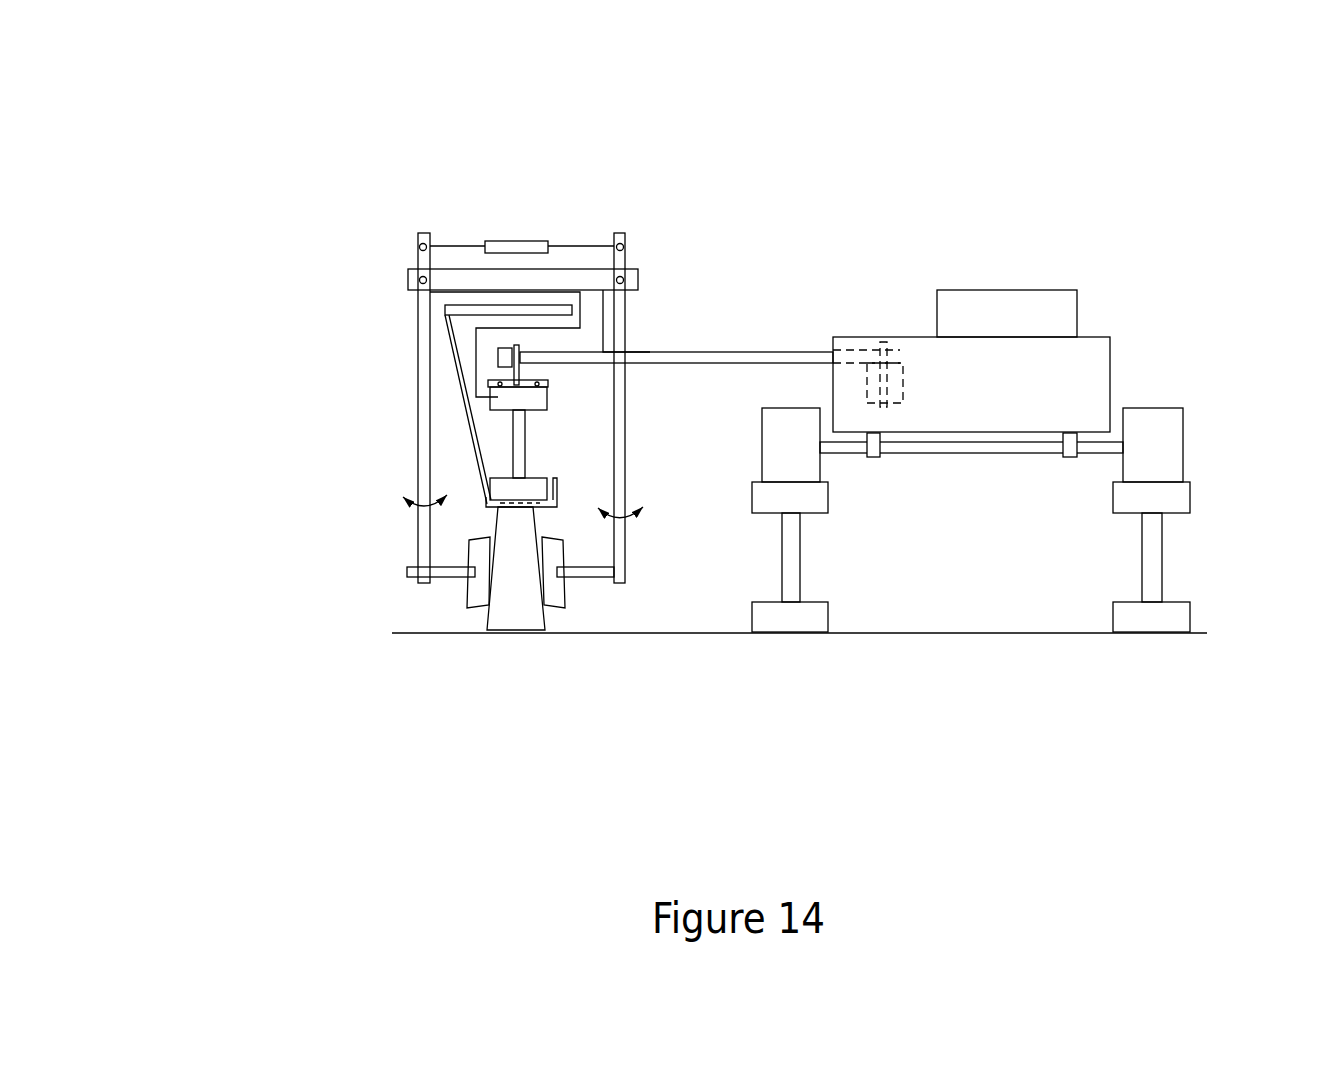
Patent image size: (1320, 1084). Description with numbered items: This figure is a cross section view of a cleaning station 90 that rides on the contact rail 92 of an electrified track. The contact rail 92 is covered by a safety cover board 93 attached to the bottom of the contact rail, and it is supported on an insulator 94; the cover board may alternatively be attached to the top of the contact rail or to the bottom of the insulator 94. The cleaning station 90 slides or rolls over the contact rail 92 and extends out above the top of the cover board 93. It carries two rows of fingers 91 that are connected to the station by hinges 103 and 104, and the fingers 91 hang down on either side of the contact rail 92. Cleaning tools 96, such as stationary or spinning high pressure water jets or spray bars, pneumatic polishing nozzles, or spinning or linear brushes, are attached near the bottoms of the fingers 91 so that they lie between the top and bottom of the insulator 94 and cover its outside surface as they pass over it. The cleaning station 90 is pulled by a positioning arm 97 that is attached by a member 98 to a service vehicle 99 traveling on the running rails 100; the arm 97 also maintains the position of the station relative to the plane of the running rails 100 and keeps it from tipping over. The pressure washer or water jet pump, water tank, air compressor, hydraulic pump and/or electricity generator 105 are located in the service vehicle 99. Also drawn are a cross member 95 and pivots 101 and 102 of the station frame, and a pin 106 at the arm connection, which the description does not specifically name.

The cleaning station 90 is at (593, 328).
The fingers 91 is at (418, 375).
The contact rail 92 is at (513, 434).
The safety cover board 93 is at (445, 310).
The insulator 94 is at (517, 527).
The top cross bar 95 is at (518, 240).
The cleaning tools 96 is at (556, 577).
The positioning arm 97 is at (708, 355).
The member 98 is at (893, 373).
The service vehicle 99 is at (1110, 360).
The running rails 100 is at (810, 537).
The upper left pivot 101 is at (418, 246).
The upper right pivot 102 is at (623, 242).
The hinge 103 is at (418, 279).
The hinge 104 is at (625, 276).
The pressure washer, water tank, air compressor, hydraulic pump and/or electricity g 105 is at (1032, 293).
The pin 106 is at (523, 372).